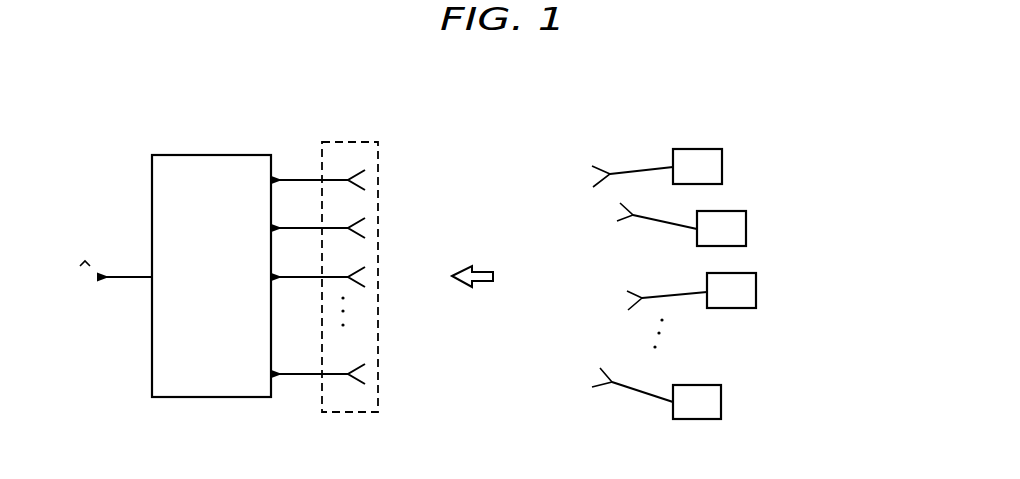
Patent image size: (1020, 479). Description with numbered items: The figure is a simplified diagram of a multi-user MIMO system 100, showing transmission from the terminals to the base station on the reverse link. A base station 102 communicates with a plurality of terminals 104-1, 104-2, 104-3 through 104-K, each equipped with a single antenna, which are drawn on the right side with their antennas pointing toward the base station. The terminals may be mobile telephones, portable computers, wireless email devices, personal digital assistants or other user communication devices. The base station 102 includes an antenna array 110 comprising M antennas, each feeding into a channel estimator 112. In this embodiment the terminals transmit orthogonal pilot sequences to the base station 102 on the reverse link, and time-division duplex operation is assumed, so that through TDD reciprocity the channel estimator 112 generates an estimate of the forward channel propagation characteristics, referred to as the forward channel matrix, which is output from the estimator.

The multi-user MIMO system 100 is at (516, 69).
The base station 102 is at (137, 123).
The terminal 104-1 is at (722, 167).
The terminal 104-2 is at (746, 229).
The terminal 104-3 is at (756, 292).
The terminal 104-K is at (721, 402).
The antenna array 110 is at (349, 142).
The channel estimator 112 is at (213, 155).